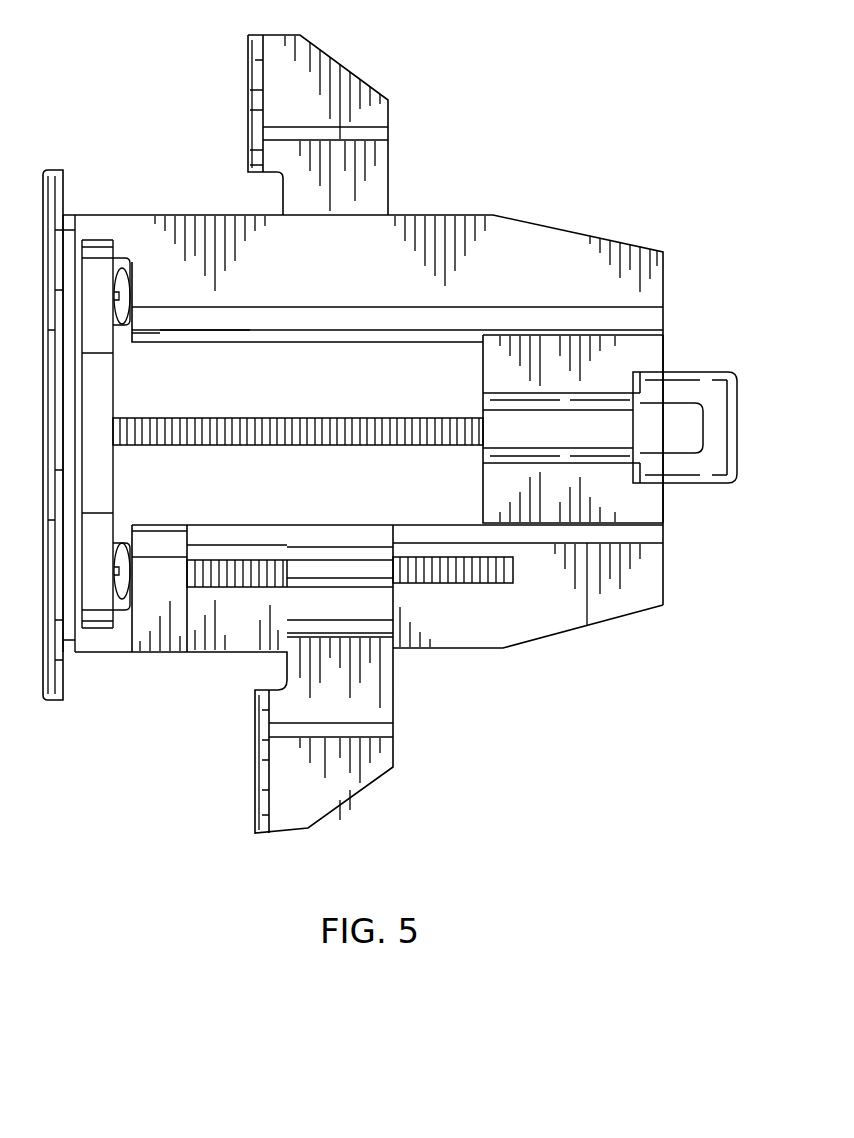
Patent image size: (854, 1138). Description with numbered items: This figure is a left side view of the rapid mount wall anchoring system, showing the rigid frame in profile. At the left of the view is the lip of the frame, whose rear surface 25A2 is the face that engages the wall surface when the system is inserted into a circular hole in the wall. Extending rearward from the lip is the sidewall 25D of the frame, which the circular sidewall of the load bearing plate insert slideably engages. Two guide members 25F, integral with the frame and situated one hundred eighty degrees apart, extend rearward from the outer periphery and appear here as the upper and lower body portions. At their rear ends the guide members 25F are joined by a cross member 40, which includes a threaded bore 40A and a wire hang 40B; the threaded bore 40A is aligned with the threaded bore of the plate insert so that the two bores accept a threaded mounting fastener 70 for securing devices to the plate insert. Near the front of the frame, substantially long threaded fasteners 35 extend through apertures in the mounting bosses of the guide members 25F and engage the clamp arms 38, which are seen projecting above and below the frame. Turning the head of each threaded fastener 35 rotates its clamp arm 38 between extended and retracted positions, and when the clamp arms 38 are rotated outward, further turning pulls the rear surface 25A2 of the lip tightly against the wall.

The clamp arm 38 is at (335, 62).
The rear surface 25A2 is at (64, 193).
The sidewall 25D is at (113, 466).
The guide member 25F is at (562, 280).
The threaded mounting fastener 70 is at (262, 418).
The threaded fastener 35 is at (235, 580).
The cross member 40 is at (630, 506).
The threaded bore 40A is at (595, 440).
The wire hang 40B is at (737, 398).